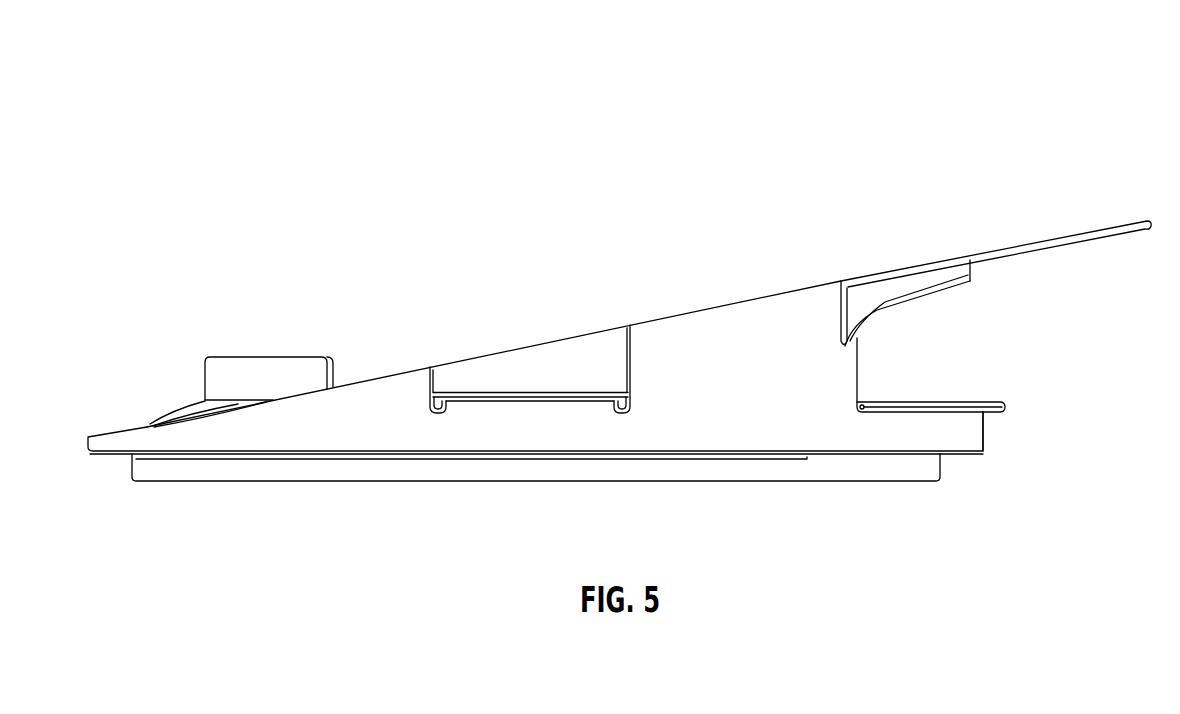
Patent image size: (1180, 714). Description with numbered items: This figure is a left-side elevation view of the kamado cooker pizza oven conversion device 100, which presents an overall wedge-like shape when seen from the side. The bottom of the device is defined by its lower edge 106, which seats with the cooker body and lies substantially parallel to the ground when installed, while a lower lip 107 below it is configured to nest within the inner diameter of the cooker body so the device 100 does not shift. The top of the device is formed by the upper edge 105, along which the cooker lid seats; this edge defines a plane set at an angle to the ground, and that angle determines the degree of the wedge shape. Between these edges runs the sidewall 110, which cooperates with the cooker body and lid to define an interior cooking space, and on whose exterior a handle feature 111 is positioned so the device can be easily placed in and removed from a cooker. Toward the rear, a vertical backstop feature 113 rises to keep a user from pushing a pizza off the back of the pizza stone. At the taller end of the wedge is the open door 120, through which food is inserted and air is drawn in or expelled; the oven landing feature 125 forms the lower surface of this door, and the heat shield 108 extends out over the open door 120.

The kamado cooker pizza oven conversion device 100 is at (1058, 63).
The upper edge 105 is at (720, 305).
The lower edge 106 is at (955, 457).
The lower lip 107 is at (773, 481).
The heat shield 108 is at (1072, 235).
The sidewall 110 is at (762, 397).
The handle feature 111 is at (540, 390).
The vertical backstop feature 113 is at (263, 377).
The open door 120 is at (917, 357).
The oven landing feature 125 is at (973, 402).